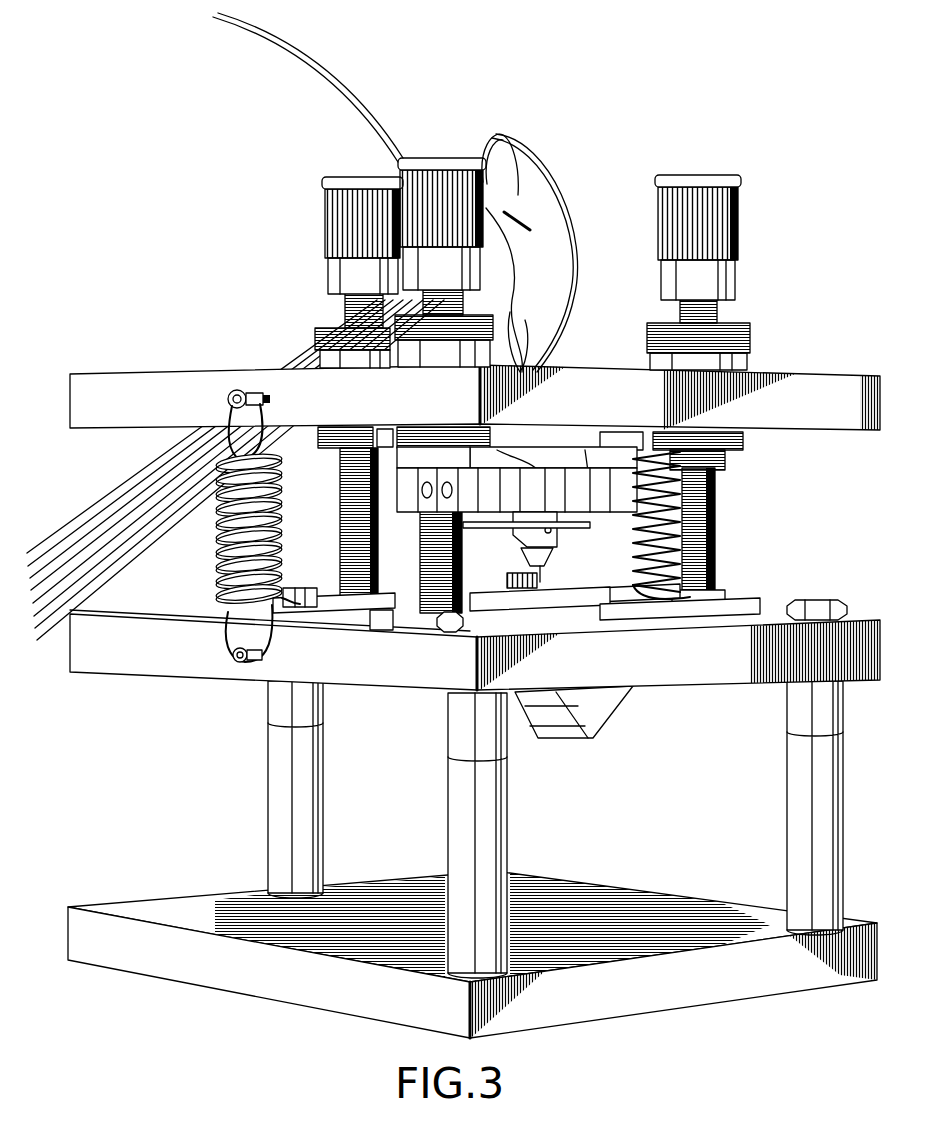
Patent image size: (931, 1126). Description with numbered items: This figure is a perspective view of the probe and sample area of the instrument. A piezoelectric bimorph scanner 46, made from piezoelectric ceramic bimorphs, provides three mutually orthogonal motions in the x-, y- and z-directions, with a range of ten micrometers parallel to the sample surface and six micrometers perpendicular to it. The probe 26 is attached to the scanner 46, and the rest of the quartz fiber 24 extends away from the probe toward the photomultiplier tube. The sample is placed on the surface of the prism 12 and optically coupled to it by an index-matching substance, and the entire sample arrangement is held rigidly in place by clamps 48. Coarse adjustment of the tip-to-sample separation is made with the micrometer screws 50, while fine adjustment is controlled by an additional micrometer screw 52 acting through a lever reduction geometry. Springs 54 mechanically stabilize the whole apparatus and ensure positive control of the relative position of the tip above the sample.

The prism 12 is at (600, 715).
The quartz fiber 24 is at (388, 124).
The probe 26 is at (550, 577).
The piezoelectric bimorph scanner 46 is at (602, 498).
The clamps 48 is at (697, 608).
The micrometer screws 50 is at (670, 213).
The micrometer screw 52 is at (337, 212).
The springs 54 is at (218, 546).